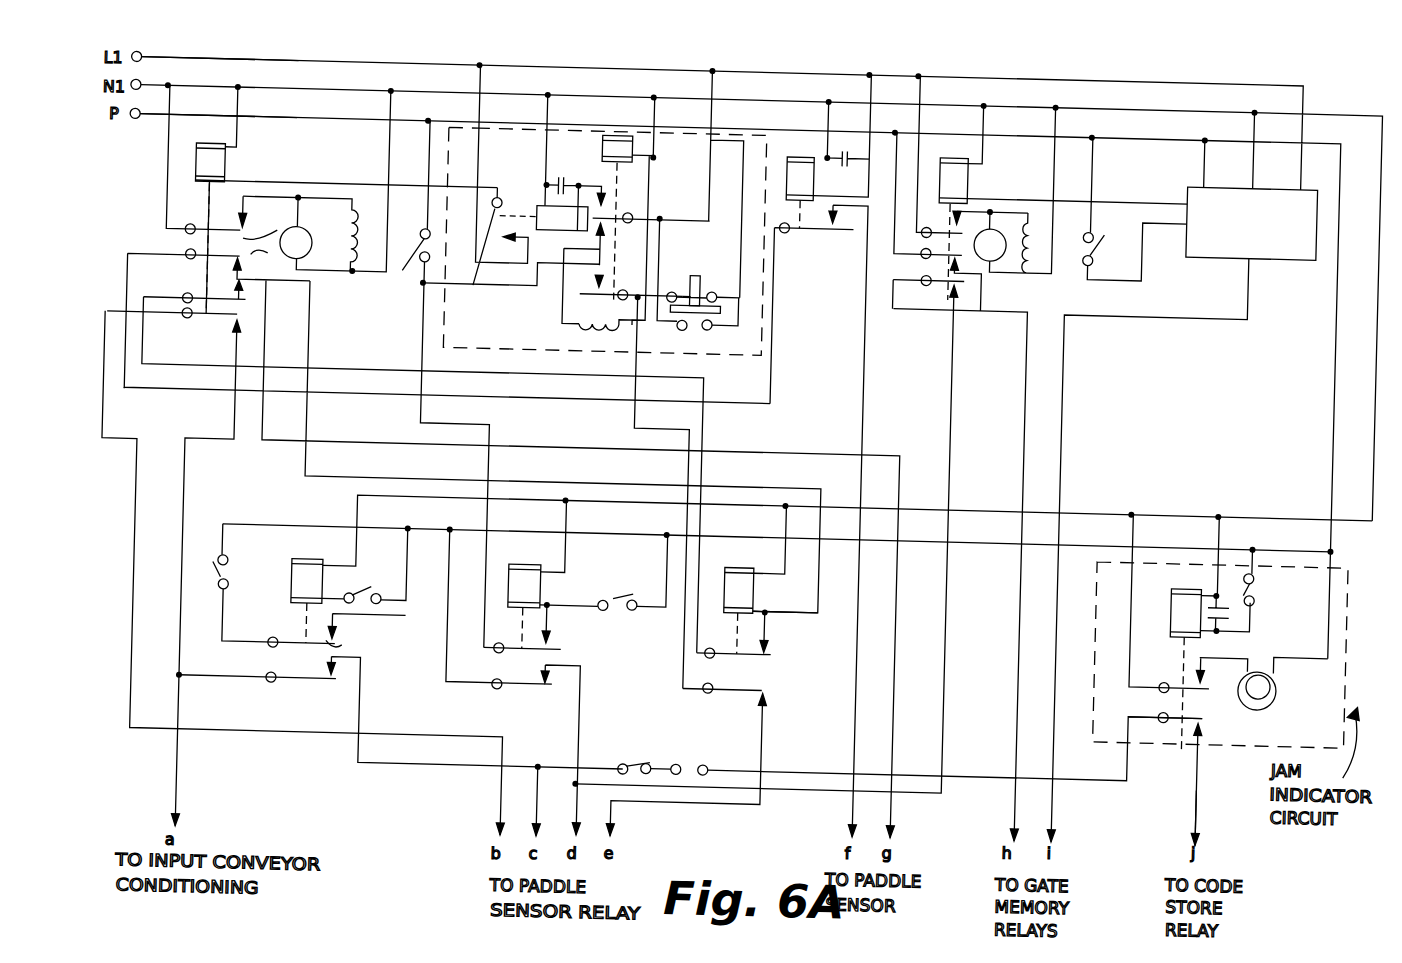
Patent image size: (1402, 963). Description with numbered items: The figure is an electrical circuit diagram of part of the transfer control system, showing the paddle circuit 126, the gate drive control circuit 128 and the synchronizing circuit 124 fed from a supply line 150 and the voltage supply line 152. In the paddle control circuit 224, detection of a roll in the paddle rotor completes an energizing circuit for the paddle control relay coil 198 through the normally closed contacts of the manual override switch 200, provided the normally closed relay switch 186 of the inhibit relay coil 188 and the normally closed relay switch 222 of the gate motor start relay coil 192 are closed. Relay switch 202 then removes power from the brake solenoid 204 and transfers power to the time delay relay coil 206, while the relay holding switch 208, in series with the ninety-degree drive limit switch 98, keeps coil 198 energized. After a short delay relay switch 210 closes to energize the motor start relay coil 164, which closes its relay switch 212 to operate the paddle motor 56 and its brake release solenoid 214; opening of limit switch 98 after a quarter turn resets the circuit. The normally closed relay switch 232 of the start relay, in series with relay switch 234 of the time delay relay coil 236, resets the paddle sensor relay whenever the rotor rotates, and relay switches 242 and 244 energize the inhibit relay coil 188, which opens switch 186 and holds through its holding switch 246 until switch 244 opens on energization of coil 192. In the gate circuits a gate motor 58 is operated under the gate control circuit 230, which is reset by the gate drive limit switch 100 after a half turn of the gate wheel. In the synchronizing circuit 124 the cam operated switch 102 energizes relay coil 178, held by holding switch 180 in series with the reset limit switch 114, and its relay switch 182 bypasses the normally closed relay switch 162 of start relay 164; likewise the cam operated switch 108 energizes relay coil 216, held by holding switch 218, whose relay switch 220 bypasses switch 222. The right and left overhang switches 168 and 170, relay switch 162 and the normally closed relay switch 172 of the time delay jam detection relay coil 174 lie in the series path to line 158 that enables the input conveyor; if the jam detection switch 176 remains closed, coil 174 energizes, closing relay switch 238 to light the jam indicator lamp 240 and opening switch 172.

The line L1 lead 150 is at (184, 44).
The voltage supply line 152 is at (163, 114).
The paddle circuit 126 is at (334, 50).
The gate drive control circuit 128 is at (1022, 65).
The synchronizing circuit 124 is at (369, 766).
The motor start relay coil 164 is at (219, 158).
The normally open relay switch 212 is at (227, 162).
The brake release solenoid 214 is at (357, 201).
The paddle motor 56 is at (356, 270).
The normally closed relay switch 232 is at (510, 542).
The relay switch 242 is at (244, 294).
The normally closed relay switch 162 is at (225, 313).
The drive limit switch 98 is at (486, 385).
The paddle control circuit 224 is at (768, 318).
The normally open relay switch 210 is at (499, 197).
The time delay relay coil 206 is at (552, 197).
The paddle control relay coil 198 is at (623, 120).
The relay switch 202 is at (616, 205).
The relay holding switch 208 is at (623, 292).
The brake solenoid 204 is at (585, 321).
The manual override switch 200 is at (697, 268).
The time delay relay coil 236 is at (797, 155).
The normally open relay switch 234 is at (819, 212).
The gate motor start relay coil 192 is at (957, 136).
The relay switch 244 is at (946, 231).
The normally closed relay switch 222 is at (942, 258).
The gate motor 58 is at (1024, 250).
The gate drive limit switch 100 is at (1104, 216).
The gate control circuit 230 is at (1284, 221).
The reset limit switch 114 is at (226, 563).
The relay coil 178 is at (312, 571).
The cam operated switch 102 is at (391, 571).
The relay holding switch 180 is at (356, 640).
The normally open relay switch 182 is at (315, 675).
The relay coil 216 is at (534, 565).
The cam operated switch 108 is at (633, 582).
The relay holding switch 218 is at (564, 636).
The normally open relay switch 220 is at (540, 675).
The inhibit relay coil 188 is at (767, 536).
The relay holding switch 246 is at (785, 641).
The normally closed relay switch 186 is at (777, 665).
The right overhang switch 168 is at (651, 747).
The left overhang switch 170 is at (707, 746).
The time delay jam detection relay coil 174 is at (1200, 575).
The jam detection switch 176 is at (1271, 564).
The normally closed relay switch 172 is at (1218, 685).
The jam indicator lamp 240 is at (1288, 676).
The normally open relay switch 238 is at (1163, 779).
The line 158 is at (1219, 785).